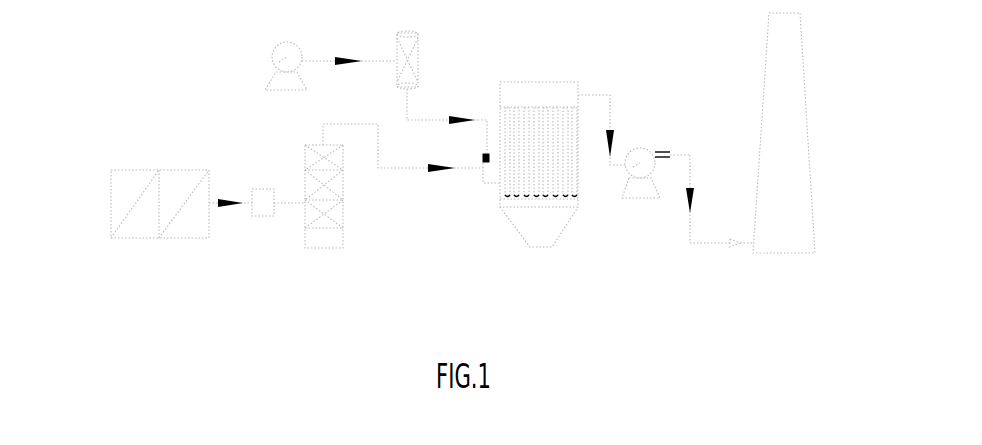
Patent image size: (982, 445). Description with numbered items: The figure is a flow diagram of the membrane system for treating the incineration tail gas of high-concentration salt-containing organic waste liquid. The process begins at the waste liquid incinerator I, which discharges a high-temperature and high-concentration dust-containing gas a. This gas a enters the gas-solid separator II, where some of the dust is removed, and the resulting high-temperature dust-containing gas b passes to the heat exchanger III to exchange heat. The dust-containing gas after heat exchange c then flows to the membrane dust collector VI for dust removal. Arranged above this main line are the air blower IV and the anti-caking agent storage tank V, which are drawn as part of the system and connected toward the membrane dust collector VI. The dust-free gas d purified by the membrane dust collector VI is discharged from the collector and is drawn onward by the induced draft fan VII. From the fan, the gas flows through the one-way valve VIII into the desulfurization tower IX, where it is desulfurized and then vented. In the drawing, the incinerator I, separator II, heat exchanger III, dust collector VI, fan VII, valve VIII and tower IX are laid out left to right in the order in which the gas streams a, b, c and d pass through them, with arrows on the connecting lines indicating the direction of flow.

The waste liquid incinerator I is at (126, 180).
The gas-solid separator II is at (215, 164).
The heat exchanger III is at (283, 172).
The air blower IV is at (306, 49).
The anti-caking agent storage tank V is at (404, 76).
The membrane dust collector VI is at (531, 125).
The induced draft fan VII is at (678, 143).
The one-way valve VIII is at (698, 267).
The desulfurization tower IX is at (815, 133).
The high-temperature and high-concentration dust-containing gas a is at (230, 218).
The high-temperature dust-containing gas b is at (289, 220).
The dust-containing gas after heat exchange c is at (403, 148).
The dust-free gas d is at (601, 117).